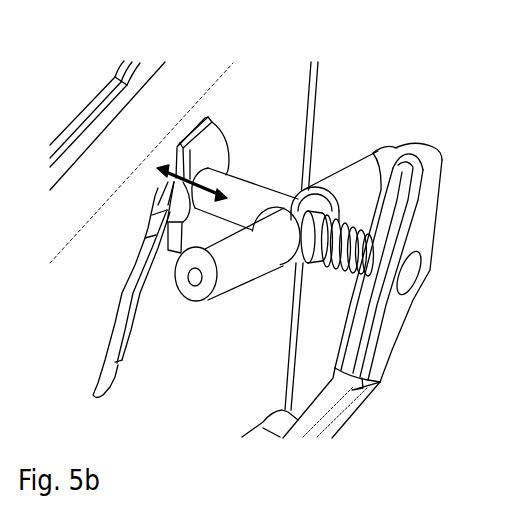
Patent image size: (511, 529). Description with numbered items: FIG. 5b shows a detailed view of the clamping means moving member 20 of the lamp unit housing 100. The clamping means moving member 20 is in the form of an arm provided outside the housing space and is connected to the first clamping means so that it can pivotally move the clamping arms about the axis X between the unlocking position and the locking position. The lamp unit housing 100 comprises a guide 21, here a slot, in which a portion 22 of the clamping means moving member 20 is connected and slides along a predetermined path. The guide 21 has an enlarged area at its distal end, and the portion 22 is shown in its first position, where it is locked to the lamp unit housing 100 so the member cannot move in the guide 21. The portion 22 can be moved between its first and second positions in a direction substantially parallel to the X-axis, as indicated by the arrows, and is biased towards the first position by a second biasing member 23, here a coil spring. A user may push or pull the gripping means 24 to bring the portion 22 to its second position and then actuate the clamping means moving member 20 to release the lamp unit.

The lamp unit housing 100 is at (283, 75).
The clamping means moving member 20 is at (378, 407).
The guide 21 is at (117, 333).
The portion 22 is at (208, 157).
The second biasing member 23 is at (357, 233).
The gripping means 24 is at (241, 262).